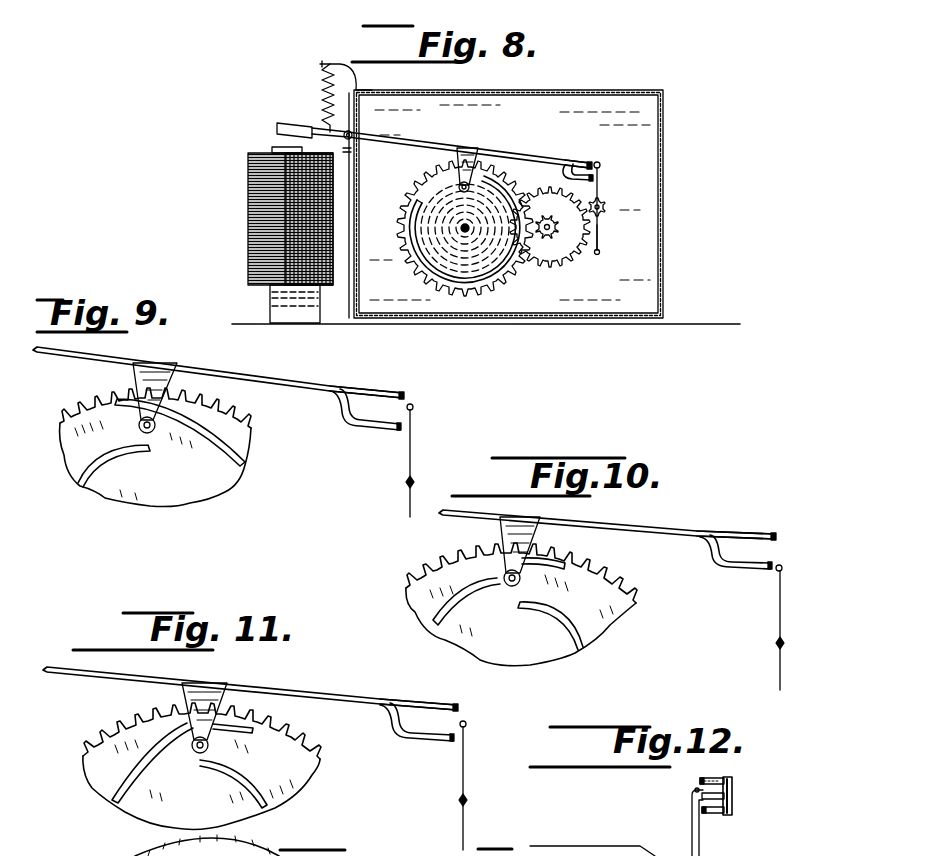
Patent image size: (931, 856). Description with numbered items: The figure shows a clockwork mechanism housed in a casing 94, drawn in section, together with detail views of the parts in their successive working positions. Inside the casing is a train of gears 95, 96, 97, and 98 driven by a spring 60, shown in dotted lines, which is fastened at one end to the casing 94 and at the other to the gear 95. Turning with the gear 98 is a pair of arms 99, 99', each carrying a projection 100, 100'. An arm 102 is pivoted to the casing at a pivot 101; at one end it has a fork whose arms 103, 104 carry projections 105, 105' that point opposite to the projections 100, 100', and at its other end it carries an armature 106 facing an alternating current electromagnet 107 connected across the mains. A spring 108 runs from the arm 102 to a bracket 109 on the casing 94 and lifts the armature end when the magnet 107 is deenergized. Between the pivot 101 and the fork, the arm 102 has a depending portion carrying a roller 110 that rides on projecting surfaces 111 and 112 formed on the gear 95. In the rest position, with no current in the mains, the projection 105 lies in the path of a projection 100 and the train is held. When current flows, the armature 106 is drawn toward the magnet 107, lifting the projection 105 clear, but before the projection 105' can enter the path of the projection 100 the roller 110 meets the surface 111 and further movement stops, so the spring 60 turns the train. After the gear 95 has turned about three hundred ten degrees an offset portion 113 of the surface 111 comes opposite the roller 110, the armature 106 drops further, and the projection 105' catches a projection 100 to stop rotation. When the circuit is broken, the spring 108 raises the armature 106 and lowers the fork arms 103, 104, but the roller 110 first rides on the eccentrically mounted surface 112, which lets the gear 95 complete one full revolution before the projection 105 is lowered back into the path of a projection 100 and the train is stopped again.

In FIG. 8, the spring 60 is at (455, 263).
In FIG. 8, the casing 94 is at (578, 91).
In FIG. 8, the gear 95 is at (454, 228).
In FIG. 9, the gear 95 is at (186, 505).
In FIG. 10, the gear 95 is at (546, 663).
In FIG. 11, the gear 95 is at (318, 787).
In FIG. 8, the gear 96 is at (553, 216).
In FIG. 8, the gear 97 is at (561, 290).
In FIG. 8, the gear 98 is at (605, 209).
In FIG. 8, the arm 99 is at (615, 209).
In FIG. 9, the arm 99 is at (428, 463).
In FIG. 10, the arm 99 is at (792, 630).
In FIG. 11, the arm 99 is at (479, 788).
In FIG. 12, the arm 99 is at (682, 823).
In FIG. 8, the arm 99' is at (618, 236).
In FIG. 8, the projection 100 is at (620, 163).
In FIG. 9, the projection 100 is at (432, 407).
In FIG. 10, the projection 100 is at (794, 576).
In FIG. 11, the projection 100 is at (483, 725).
In FIG. 12, the projection 100 is at (682, 781).
In FIG. 8, the projection 100' is at (625, 261).
In FIG. 8, the pivot 101 is at (354, 139).
In FIG. 8, the arm 102 is at (428, 143).
In FIG. 9, the arm 102 is at (248, 381).
In FIG. 10, the arm 102 is at (617, 525).
In FIG. 11, the arm 102 is at (259, 690).
In FIG. 12, the arm 102 is at (733, 796).
In FIG. 8, the fork arm 103 is at (576, 161).
In FIG. 9, the fork arm 103 is at (361, 388).
In FIG. 10, the fork arm 103 is at (724, 530).
In FIG. 11, the fork arm 103 is at (403, 701).
In FIG. 12, the fork arm 103 is at (734, 781).
In FIG. 8, the fork arm 104 is at (578, 172).
In FIG. 9, the fork arm 104 is at (345, 432).
In FIG. 10, the fork arm 104 is at (733, 565).
In FIG. 11, the fork arm 104 is at (395, 739).
In FIG. 12, the fork arm 104 is at (733, 812).
In FIG. 8, the projection 105 is at (604, 152).
In FIG. 9, the projection 105 is at (421, 385).
In FIG. 10, the projection 105 is at (792, 525).
In FIG. 11, the projection 105 is at (477, 702).
In FIG. 12, the projection 105 is at (721, 771).
In FIG. 9, the projection 105' is at (391, 451).
In FIG. 10, the projection 105' is at (761, 585).
In FIG. 11, the projection 105' is at (440, 757).
In FIG. 12, the projection 105' is at (721, 827).
In FIG. 8, the armature 106 is at (277, 133).
In FIG. 8, the alternating current electromagnet 107 is at (250, 205).
In FIG. 8, the spring 108 is at (320, 88).
In FIG. 8, the bracket 109 is at (337, 64).
In FIG. 8, the roller 110 is at (452, 180).
In FIG. 9, the roller 110 is at (153, 441).
In FIG. 10, the roller 110 is at (523, 586).
In FIG. 11, the roller 110 is at (215, 750).
In FIG. 9, the projecting surface 111 is at (215, 448).
In FIG. 10, the projecting surface 111 is at (452, 601).
In FIG. 11, the projecting surface 111 is at (165, 760).
In FIG. 8, the projecting surface 112 is at (494, 190).
In FIG. 9, the projecting surface 112 is at (103, 461).
In FIG. 10, the projecting surface 112 is at (579, 630).
In FIG. 11, the projecting surface 112 is at (213, 781).
In FIG. 8, the offset portion 113 is at (412, 201).
In FIG. 10, the offset portion 113 is at (568, 565).